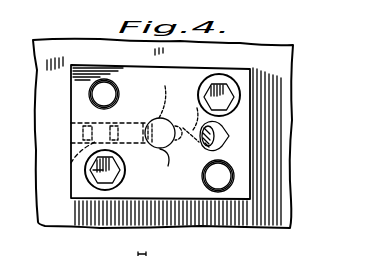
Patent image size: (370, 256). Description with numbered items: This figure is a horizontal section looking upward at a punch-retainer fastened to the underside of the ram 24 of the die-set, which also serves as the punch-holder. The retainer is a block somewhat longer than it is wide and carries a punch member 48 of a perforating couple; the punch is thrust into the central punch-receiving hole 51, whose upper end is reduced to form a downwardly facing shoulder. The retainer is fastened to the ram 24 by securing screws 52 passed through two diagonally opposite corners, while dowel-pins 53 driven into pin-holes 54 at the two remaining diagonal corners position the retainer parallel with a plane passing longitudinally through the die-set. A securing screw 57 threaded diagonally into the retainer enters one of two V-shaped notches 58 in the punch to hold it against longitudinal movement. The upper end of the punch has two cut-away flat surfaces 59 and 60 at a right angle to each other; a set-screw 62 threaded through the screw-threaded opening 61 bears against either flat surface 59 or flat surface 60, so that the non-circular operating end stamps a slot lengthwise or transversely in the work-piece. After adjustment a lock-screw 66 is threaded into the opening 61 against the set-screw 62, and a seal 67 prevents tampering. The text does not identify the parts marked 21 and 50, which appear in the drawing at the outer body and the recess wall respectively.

The base plate 21 is at (53, 220).
The ram 24 is at (272, 148).
The punch member 48 is at (205, 72).
The recess wall 50 is at (82, 108).
The punch-receiving hole 51 is at (169, 157).
The securing screw 52 is at (207, 95).
The dowel-pin 53 is at (115, 87).
The pin-hole 54 is at (121, 105).
The securing screw 57 is at (204, 126).
The V-shaped notch 58 is at (158, 146).
The cut-away flat surface 59 is at (168, 93).
The cut-away flat surface 60 is at (109, 125).
The screw-threaded opening 61 is at (70, 161).
The set-screw 62 is at (117, 179).
The lock-screw 66 is at (72, 128).
The seal 67 is at (72, 141).